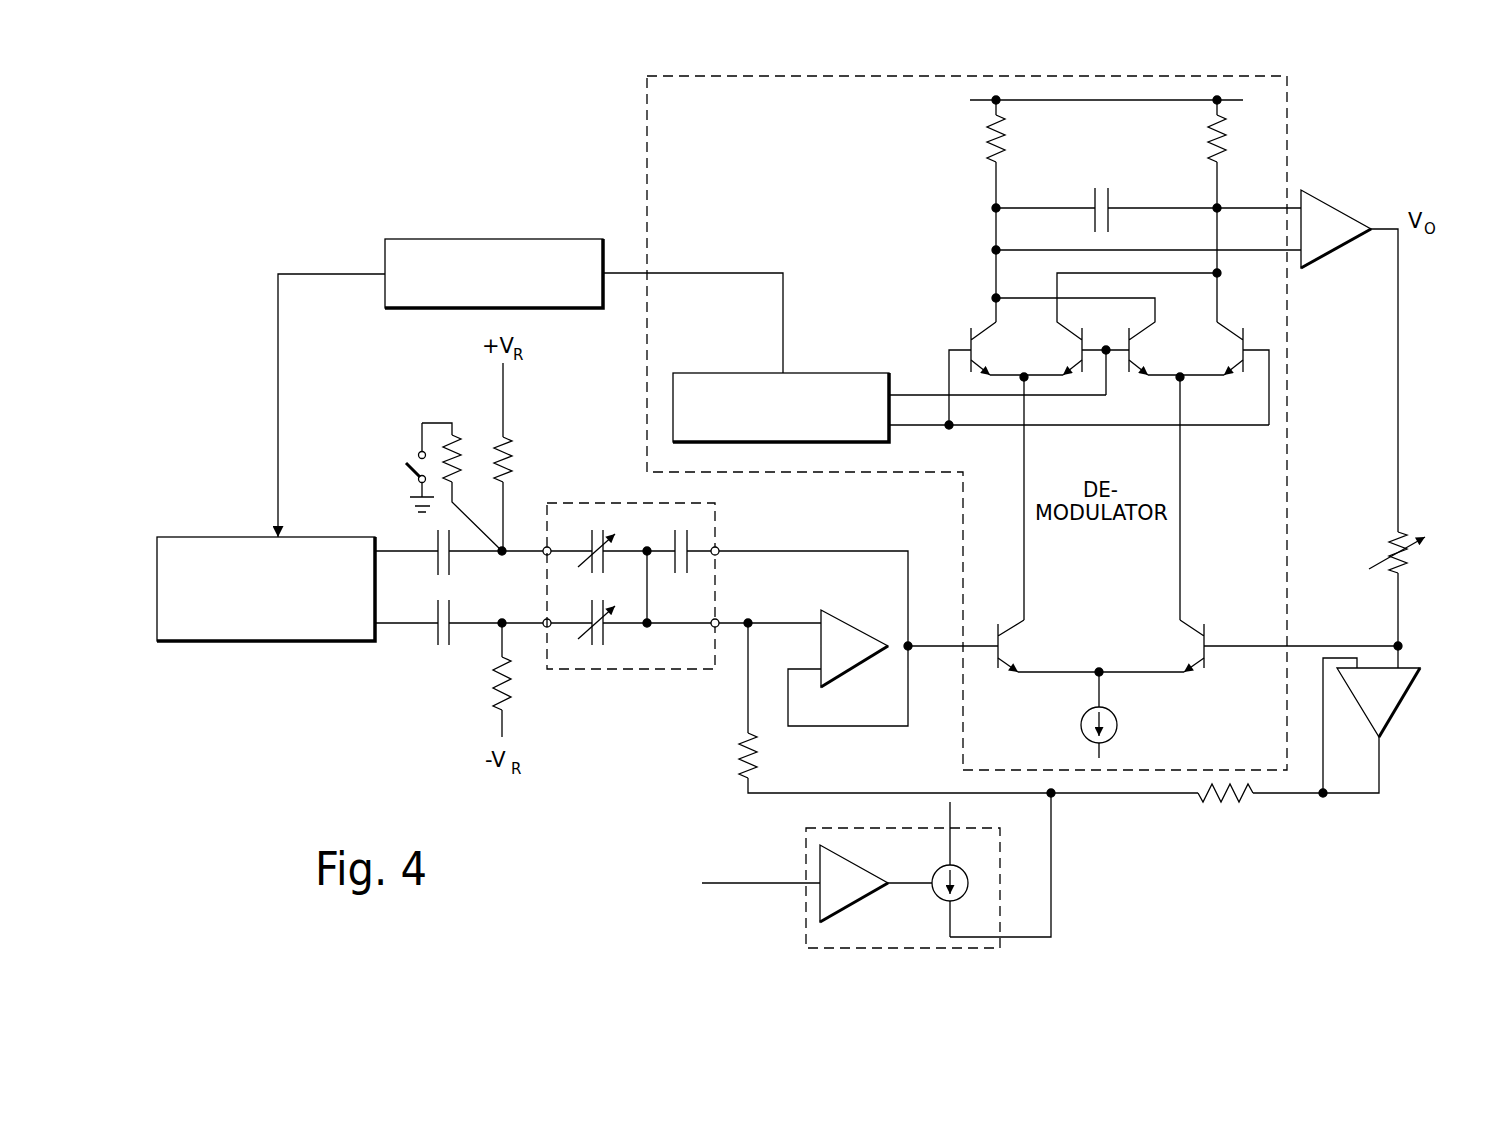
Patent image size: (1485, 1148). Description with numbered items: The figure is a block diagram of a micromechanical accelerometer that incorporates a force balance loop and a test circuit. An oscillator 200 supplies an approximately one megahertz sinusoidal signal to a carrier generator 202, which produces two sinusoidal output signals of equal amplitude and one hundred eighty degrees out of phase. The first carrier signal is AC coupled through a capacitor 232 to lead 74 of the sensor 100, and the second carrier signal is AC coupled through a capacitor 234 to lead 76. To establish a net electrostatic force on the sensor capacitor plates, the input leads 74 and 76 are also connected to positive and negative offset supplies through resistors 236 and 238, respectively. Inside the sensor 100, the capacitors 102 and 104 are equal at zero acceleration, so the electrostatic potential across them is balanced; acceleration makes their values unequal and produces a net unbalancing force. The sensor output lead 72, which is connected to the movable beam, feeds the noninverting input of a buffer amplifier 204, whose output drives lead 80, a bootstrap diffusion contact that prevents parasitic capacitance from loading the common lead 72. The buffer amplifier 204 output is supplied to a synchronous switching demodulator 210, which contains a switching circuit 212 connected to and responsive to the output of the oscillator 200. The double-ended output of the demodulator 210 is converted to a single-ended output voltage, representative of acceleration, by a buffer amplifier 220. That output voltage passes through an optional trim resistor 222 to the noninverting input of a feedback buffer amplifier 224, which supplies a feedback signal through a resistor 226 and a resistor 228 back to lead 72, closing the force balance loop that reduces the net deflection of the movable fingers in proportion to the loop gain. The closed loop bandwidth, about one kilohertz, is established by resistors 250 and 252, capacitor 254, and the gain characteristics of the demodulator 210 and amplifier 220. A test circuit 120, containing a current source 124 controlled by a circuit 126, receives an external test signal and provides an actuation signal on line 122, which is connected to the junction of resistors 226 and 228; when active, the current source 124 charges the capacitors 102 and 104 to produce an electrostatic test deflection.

The sensor output lead 72 is at (766, 611).
The sensor input lead 74 is at (524, 540).
The sensor input lead 76 is at (524, 612).
The bootstrap diffusion contact lead 80 is at (735, 541).
The sensor 100 is at (631, 553).
The capacitor 102 is at (588, 548).
The capacitor 104 is at (588, 618).
The test circuit 120 is at (837, 877).
The line 122 is at (1051, 908).
The current source 124 is at (937, 895).
The circuit 126 is at (862, 868).
The oscillator 200 is at (545, 239).
The carrier generator 202 is at (222, 537).
The buffer amplifier 204 is at (860, 630).
The synchronous switching demodulator 210 is at (645, 130).
The switching circuit 212 is at (832, 373).
The buffer amplifier 220 is at (1352, 180).
The trim resistor 222 is at (1400, 575).
The feedback buffer amplifier 224 is at (1400, 703).
The resistor 226 is at (1215, 803).
The resistor 228 is at (757, 762).
The capacitor 232 is at (432, 545).
The capacitor 234 is at (452, 617).
The resistor 236 is at (512, 456).
The resistor 238 is at (495, 688).
The resistor 250 is at (988, 138).
The resistor 252 is at (1212, 140).
The capacitor 254 is at (1092, 205).